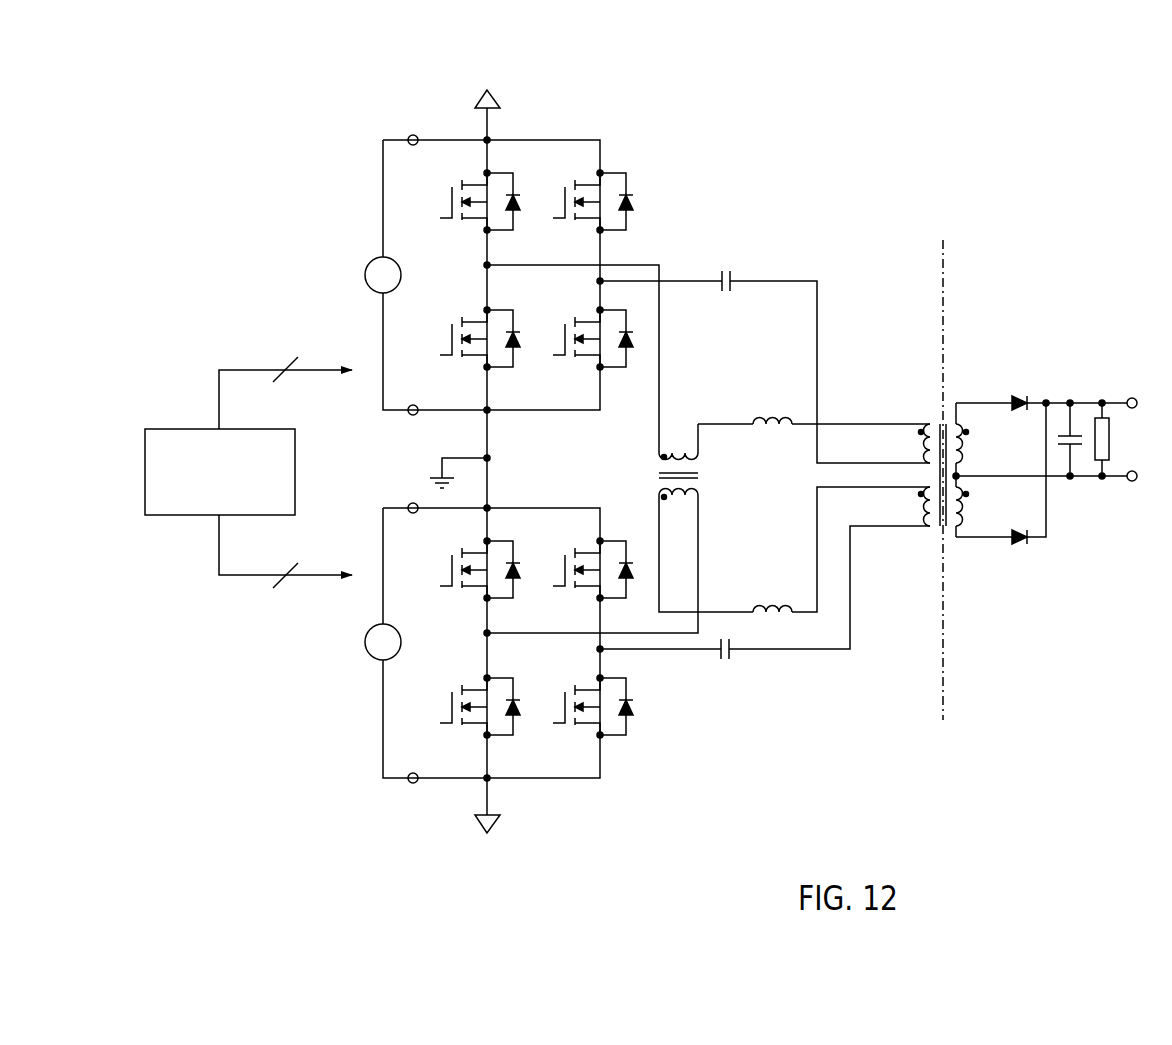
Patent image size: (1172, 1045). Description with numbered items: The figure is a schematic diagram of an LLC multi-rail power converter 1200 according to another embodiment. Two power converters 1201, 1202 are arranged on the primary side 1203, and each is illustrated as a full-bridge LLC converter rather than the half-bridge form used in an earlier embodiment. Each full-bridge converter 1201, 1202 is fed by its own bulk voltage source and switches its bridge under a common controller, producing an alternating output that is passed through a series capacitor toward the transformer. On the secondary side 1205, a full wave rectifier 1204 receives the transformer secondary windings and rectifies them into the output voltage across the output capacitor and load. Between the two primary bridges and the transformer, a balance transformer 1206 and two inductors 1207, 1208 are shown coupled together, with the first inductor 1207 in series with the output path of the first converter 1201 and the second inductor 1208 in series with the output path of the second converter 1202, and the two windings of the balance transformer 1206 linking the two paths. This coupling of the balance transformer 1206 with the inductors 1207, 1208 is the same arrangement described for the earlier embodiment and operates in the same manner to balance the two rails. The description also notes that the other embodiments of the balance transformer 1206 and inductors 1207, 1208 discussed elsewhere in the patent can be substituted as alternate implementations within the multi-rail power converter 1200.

The LLC multi-rail power converter 1200 is at (225, 116).
The power converter 1201 is at (341, 281).
The power converter 1202 is at (341, 692).
The primary side 1203 is at (912, 700).
The full wave rectifier 1204 is at (1076, 366).
The secondary side 1205 is at (1010, 700).
The balance transformer 1206 is at (637, 483).
The inductor 1207 is at (753, 418).
The inductor 1208 is at (753, 606).